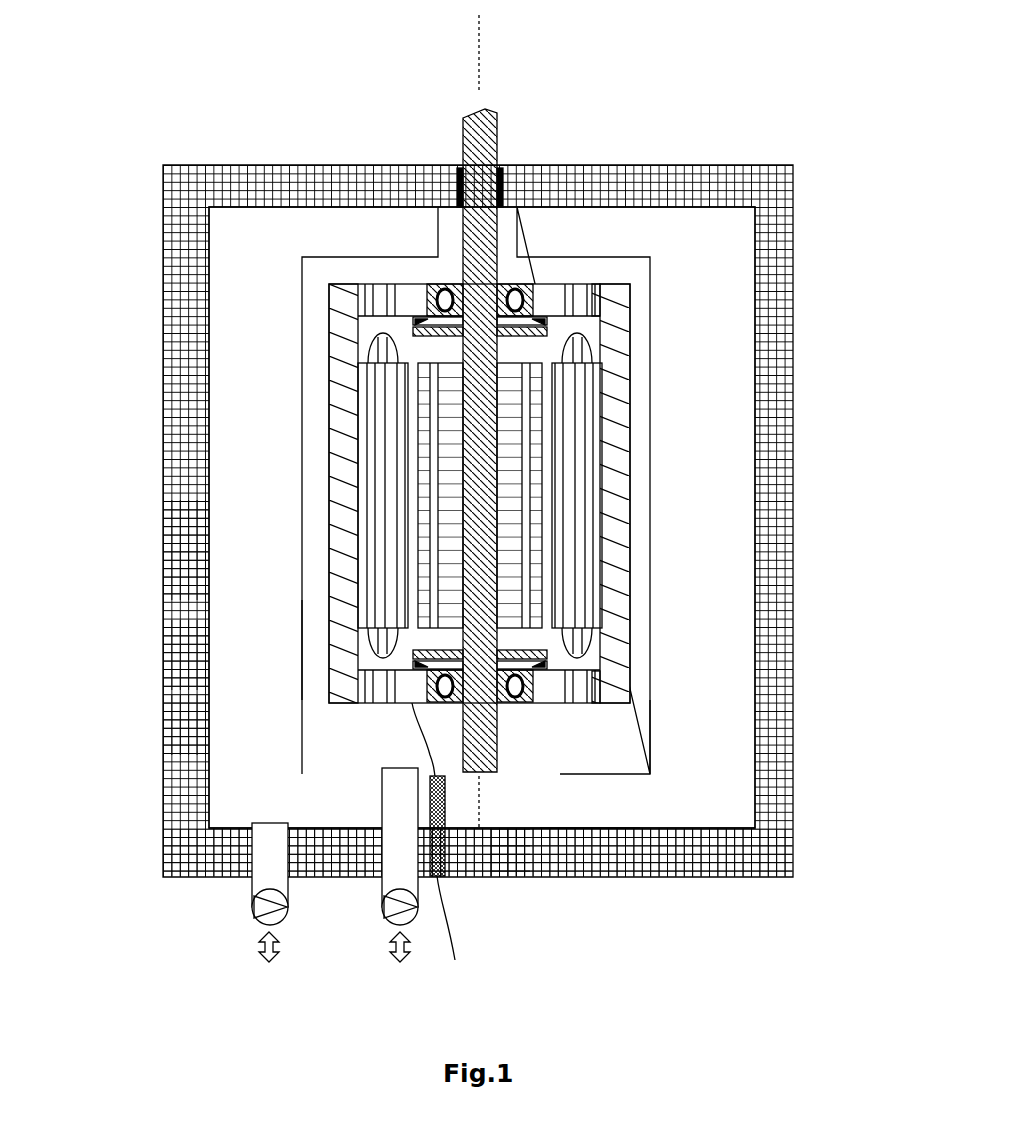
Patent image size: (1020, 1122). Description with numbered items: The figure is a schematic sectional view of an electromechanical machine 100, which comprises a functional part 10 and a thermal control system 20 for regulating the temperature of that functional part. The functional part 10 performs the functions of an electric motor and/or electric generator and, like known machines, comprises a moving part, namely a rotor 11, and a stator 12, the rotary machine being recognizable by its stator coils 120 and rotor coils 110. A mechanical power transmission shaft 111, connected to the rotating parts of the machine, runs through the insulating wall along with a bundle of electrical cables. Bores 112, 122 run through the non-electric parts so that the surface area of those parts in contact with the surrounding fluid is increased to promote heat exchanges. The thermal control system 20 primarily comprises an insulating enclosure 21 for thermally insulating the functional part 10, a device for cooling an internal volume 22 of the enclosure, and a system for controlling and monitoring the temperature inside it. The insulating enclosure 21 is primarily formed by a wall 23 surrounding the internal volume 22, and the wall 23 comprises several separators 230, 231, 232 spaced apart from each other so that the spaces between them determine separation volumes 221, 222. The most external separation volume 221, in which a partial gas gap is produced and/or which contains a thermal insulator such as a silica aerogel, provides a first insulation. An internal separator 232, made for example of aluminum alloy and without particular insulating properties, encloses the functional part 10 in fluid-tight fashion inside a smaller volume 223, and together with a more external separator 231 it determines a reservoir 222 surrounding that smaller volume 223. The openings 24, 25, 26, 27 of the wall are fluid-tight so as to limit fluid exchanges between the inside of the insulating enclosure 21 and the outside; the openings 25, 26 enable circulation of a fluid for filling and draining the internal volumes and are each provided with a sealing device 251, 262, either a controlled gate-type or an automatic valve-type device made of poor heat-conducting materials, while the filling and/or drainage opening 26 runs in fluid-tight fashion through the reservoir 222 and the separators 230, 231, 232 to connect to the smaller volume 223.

The electromechanical machine 100 is at (434, 502).
The thermal control system 20 is at (434, 507).
The functional part 10 is at (469, 501).
The mechanical power transmission shaft 111 is at (468, 114).
The opening 24 is at (503, 157).
The bore 122 is at (592, 288).
The bore 112 is at (605, 372).
The stator 12 is at (486, 474).
The stator coils 120 is at (380, 392).
The rotor 11 is at (383, 495).
The rotor coils 110 is at (427, 488).
The most external separation volume 221 is at (176, 563).
The reservoir 222 is at (228, 662).
The smaller volume 223 is at (310, 652).
The wall 23 is at (160, 708).
The internal volume 22 is at (236, 759).
The insulating enclosure 21 is at (162, 858).
The opening 25 is at (235, 906).
The sealing device 251 is at (250, 918).
The filling and/or drainage opening 26 is at (365, 876).
The outlet pump 262 is at (383, 915).
The opening 27 is at (450, 876).
The separator 230 is at (510, 876).
The more external separator 231 is at (590, 828).
The internal separator 232 is at (645, 774).